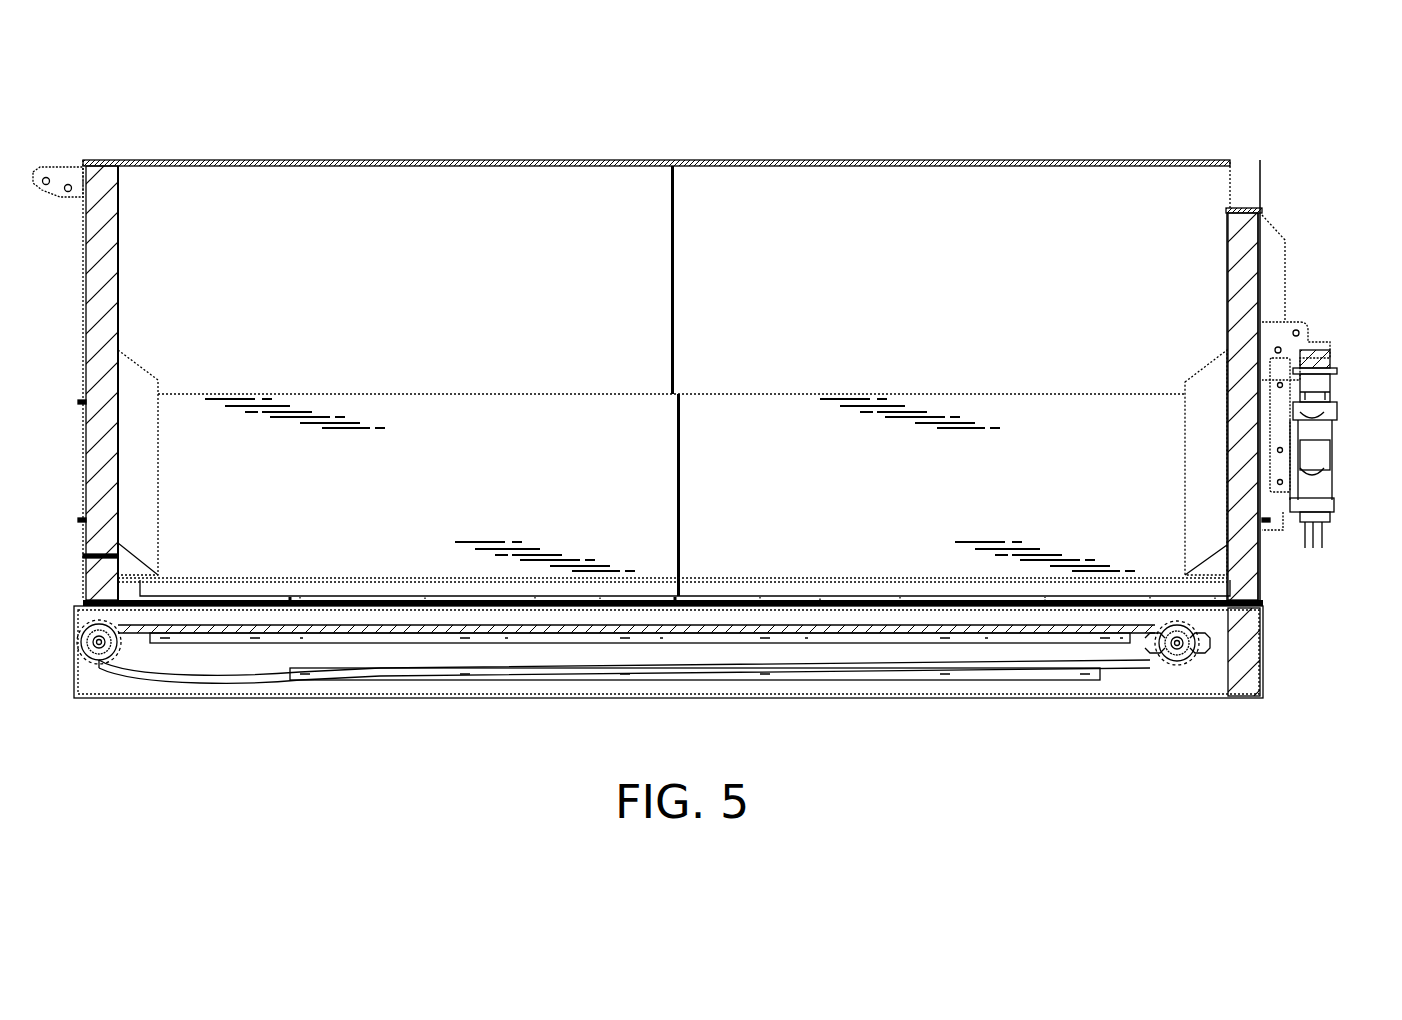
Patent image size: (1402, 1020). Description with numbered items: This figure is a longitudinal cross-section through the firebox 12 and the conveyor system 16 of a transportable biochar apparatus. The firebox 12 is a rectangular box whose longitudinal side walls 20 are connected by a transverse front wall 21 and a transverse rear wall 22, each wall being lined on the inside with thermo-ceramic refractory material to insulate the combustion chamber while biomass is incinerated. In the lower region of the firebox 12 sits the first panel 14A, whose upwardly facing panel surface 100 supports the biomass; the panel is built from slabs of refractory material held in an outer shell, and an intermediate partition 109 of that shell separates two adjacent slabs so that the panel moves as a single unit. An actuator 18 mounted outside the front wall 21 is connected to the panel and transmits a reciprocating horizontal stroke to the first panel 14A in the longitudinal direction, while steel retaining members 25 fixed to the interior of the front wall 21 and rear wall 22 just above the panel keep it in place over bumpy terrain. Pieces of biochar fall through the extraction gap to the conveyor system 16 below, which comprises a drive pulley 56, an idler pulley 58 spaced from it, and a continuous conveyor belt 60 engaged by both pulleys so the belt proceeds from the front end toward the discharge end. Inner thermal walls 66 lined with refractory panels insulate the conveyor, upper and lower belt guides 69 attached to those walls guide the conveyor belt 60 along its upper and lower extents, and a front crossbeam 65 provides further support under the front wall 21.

The firebox 12 is at (273, 124).
The first panel 14A is at (742, 393).
The conveyor system 16 is at (700, 688).
The actuator 18 is at (1322, 408).
The longitudinal side wall 20 is at (570, 185).
The front wall 21 is at (1245, 302).
The rear wall 22 is at (95, 330).
The retaining member 25 is at (150, 385).
The drive pulley 56 is at (97, 647).
The idler pulley 58 is at (1170, 648).
The conveyor belt 60 is at (185, 672).
The front crossbeam 65 is at (1247, 660).
The inner thermal wall 66 is at (828, 697).
The belt guide 69 is at (605, 674).
The panel surface 100 is at (535, 477).
The intermediate partition 109 is at (680, 518).